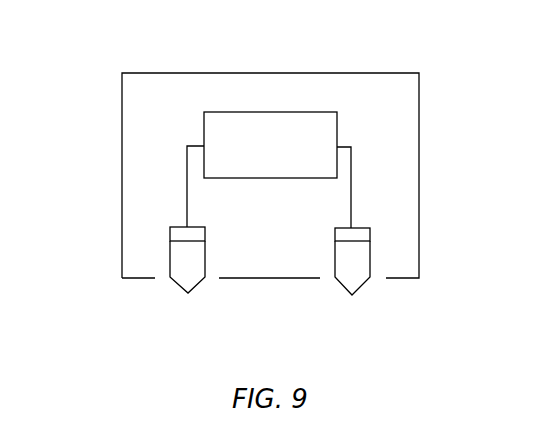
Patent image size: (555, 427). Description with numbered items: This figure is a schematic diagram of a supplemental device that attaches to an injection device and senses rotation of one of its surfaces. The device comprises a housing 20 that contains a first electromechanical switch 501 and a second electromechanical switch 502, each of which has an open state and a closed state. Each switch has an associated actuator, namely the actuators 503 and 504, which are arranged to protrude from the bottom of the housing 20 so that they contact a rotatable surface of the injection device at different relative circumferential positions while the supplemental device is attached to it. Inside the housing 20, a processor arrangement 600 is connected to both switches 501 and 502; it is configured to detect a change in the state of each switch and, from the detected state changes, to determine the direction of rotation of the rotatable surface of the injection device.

The housing 20 is at (419, 132).
The processor arrangement 600 is at (287, 130).
The first electromechanical switch 501 is at (180, 236).
The second electromechanical switch 502 is at (358, 236).
The actuator 503 is at (187, 278).
The actuator 504 is at (352, 278).